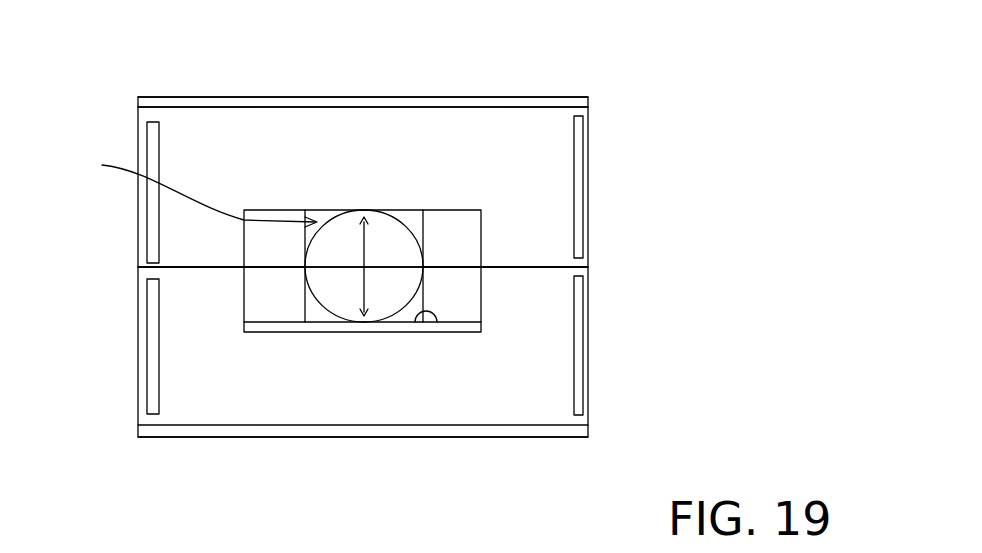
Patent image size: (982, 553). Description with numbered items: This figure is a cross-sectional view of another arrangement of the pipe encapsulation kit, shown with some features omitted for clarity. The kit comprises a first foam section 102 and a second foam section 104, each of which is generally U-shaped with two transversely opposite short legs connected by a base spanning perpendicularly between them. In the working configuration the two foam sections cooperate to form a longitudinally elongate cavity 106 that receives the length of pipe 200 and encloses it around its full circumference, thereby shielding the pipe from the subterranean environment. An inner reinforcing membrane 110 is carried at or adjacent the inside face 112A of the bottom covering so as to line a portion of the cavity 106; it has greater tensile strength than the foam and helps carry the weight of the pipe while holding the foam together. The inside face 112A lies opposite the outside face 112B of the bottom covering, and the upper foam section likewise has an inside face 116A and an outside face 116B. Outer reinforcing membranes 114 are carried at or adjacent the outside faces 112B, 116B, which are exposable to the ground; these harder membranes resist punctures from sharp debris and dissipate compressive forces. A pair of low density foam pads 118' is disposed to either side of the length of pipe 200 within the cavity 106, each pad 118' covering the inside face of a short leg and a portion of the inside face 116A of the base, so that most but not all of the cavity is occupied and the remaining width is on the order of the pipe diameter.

The first foam section 102 is at (180, 377).
The second foam section 104 is at (553, 157).
The longitudinally elongate cavity 106 is at (184, 191).
The inner reinforcing membrane 110 is at (270, 327).
The inside face of the bottom covering 112A is at (413, 320).
The outside face of the bottom covering 112B is at (382, 437).
The outer reinforcing membrane 114 is at (228, 98).
The inside face of the base 116A is at (460, 212).
The outside face of the upper foam section 116B is at (333, 97).
The pad 118' is at (363, 266).
The length of pipe 200 is at (402, 225).